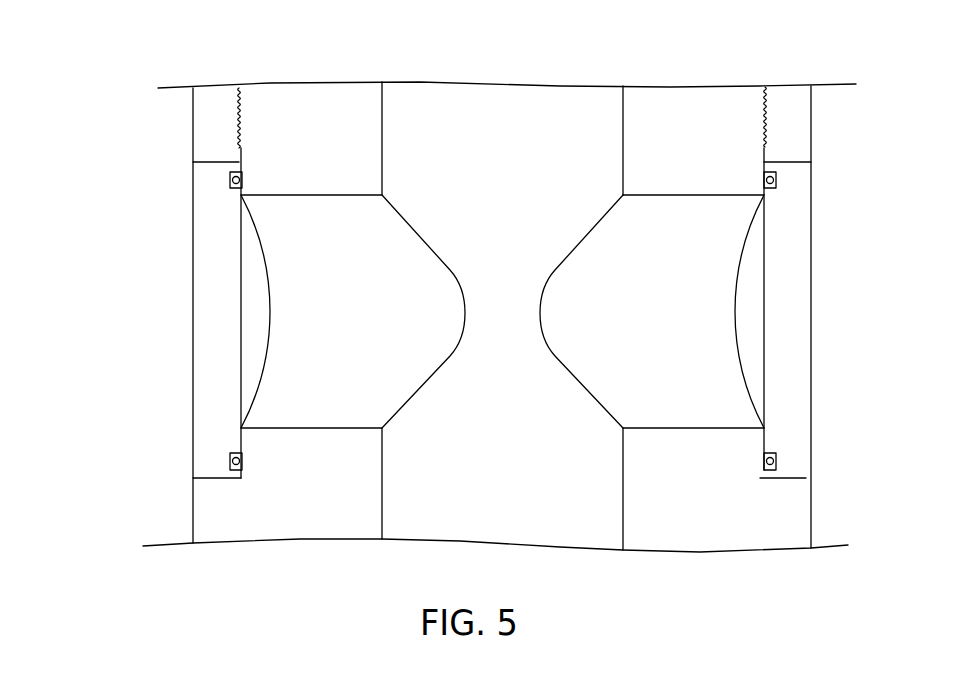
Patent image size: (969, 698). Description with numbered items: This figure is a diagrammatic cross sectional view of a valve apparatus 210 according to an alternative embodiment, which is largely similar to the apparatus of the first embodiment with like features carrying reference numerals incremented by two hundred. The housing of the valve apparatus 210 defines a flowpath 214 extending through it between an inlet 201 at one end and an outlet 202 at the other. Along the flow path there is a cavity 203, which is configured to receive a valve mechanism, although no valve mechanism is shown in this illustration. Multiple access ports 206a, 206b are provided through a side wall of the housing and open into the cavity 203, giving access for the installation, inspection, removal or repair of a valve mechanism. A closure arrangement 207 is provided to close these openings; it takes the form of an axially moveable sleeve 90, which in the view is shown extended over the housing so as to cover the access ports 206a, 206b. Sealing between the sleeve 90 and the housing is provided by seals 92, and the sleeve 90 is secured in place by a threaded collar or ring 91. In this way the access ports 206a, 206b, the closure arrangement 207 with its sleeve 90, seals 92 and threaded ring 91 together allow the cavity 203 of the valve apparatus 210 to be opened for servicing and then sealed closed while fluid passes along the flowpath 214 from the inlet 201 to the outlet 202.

The valve apparatus 210 is at (127, 99).
The inlet 201 is at (425, 82).
The outlet 202 is at (437, 541).
The cavity 203 is at (502, 314).
The access port 206a is at (683, 244).
The access port 206b is at (332, 212).
The closure arrangement 207 is at (163, 277).
The flowpath 214 is at (623, 128).
The axially moveable sleeve 90 is at (207, 362).
The threaded collar or ring 91 is at (215, 103).
The seals 92 is at (228, 177).